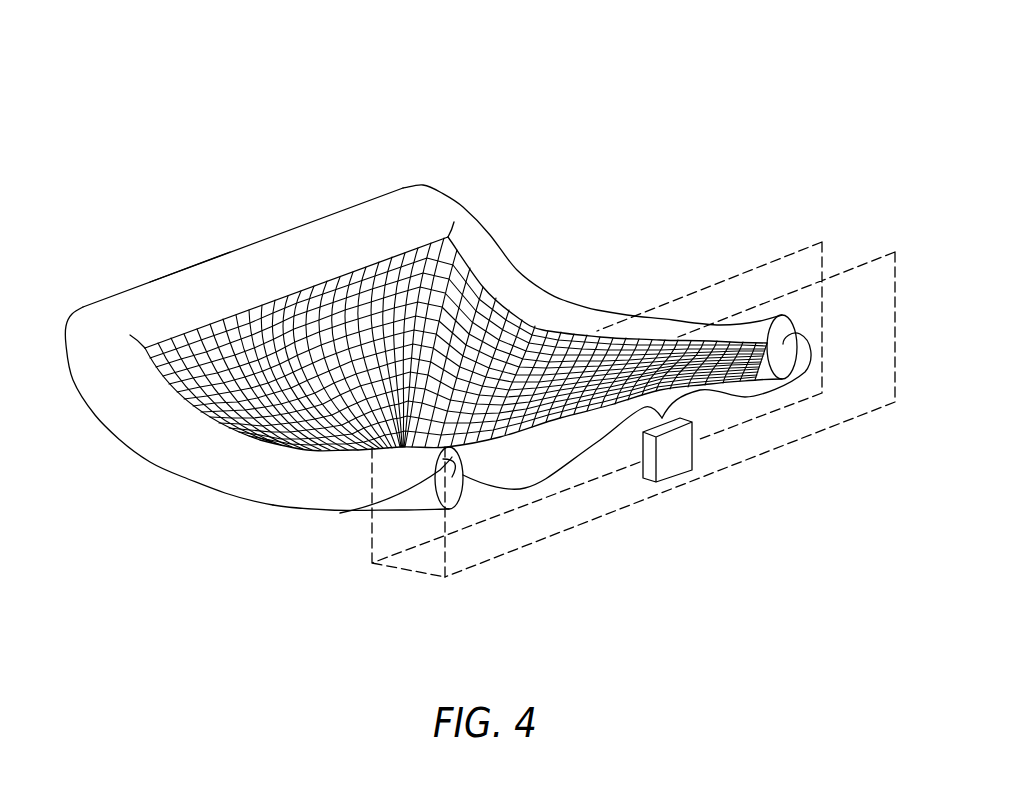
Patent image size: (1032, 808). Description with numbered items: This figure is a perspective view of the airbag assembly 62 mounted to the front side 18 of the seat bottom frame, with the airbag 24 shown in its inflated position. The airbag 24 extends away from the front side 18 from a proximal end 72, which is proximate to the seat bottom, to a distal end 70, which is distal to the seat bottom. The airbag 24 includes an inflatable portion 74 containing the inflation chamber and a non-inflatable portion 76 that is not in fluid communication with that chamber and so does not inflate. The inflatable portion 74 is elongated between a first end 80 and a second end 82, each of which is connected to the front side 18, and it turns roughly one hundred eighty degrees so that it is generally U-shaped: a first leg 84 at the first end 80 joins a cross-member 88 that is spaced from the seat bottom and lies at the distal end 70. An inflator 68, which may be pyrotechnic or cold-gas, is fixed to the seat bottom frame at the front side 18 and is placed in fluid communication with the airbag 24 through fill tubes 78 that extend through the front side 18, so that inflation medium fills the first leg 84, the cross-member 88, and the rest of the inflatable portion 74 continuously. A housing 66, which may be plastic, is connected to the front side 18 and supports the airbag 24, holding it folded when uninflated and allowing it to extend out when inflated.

The airbag assembly 62 is at (502, 70).
The airbag 24 is at (323, 200).
The distal end 70 is at (268, 233).
The cross-member 88 is at (185, 270).
The first leg 84 is at (207, 465).
The inflatable portion 74 is at (300, 483).
The first end 80 is at (300, 482).
The proximal end 72 is at (437, 497).
The second end 82 is at (795, 318).
The non-inflatable portion 76 is at (170, 393).
The fill tubes 78 is at (550, 477).
The inflator 68 is at (682, 464).
The front side 18 is at (820, 432).
The housing 66 is at (510, 553).